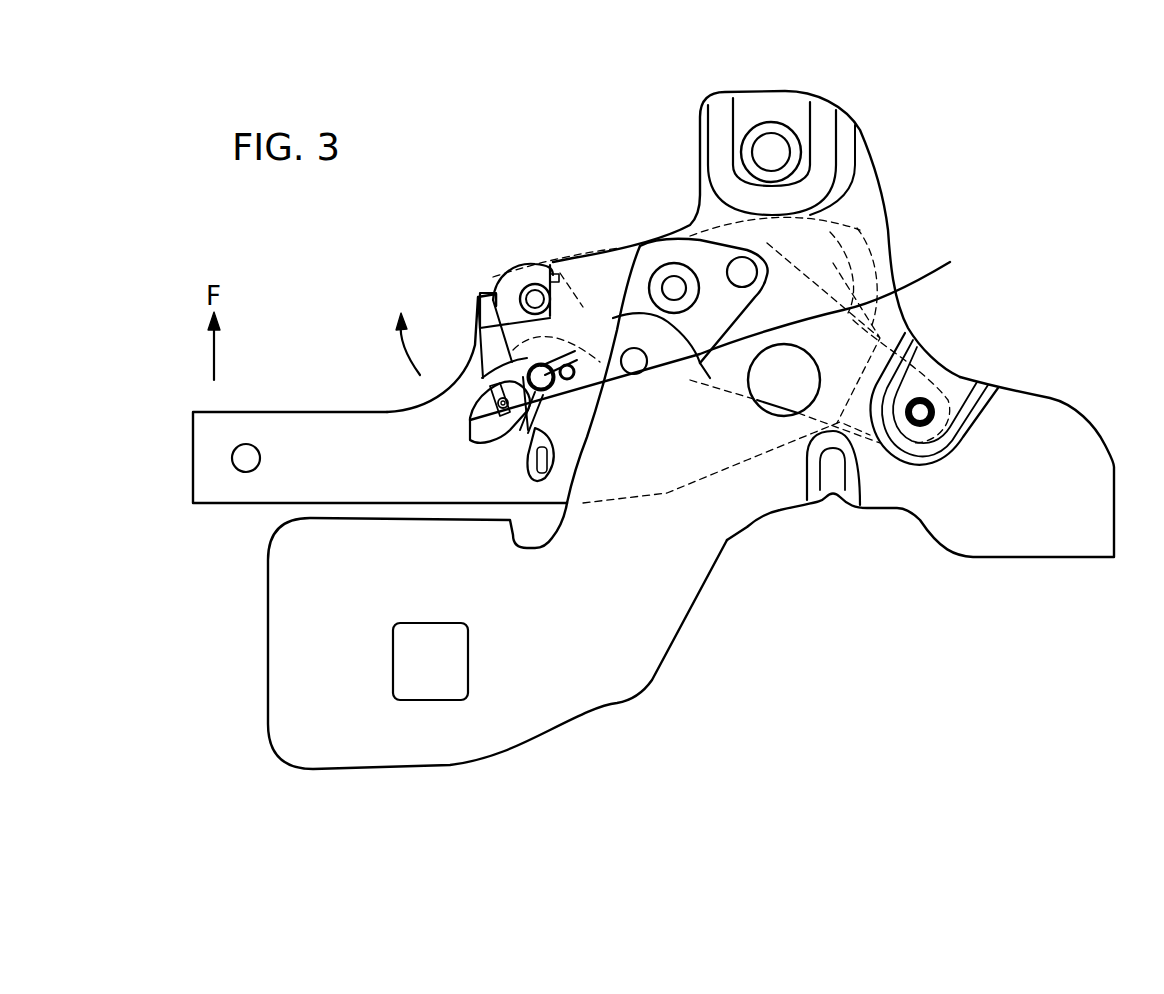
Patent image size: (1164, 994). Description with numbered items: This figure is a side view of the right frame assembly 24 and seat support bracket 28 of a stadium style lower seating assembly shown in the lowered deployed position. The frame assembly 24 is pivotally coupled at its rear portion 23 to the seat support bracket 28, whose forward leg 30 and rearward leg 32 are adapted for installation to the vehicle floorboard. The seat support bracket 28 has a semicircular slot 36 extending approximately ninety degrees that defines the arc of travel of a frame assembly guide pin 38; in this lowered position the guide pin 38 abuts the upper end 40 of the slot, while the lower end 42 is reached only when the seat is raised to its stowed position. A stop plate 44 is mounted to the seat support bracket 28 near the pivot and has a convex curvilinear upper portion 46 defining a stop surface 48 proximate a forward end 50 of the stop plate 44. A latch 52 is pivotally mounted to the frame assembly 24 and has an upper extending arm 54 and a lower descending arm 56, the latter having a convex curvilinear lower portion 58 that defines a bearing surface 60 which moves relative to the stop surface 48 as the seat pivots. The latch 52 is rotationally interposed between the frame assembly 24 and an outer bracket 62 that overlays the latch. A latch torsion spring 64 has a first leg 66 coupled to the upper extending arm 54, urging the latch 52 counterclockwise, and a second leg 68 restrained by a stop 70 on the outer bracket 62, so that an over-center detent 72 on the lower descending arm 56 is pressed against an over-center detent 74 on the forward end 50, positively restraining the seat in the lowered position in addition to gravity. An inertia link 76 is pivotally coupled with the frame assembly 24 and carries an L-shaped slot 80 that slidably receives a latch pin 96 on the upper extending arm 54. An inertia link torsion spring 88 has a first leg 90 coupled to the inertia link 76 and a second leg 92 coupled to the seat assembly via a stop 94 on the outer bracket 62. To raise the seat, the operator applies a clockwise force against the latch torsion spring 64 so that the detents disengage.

The rear portion 23 is at (640, 493).
The frame assembly 24 is at (310, 447).
The seat support bracket 28 is at (510, 724).
The forward leg 30 is at (363, 757).
The rearward leg 32 is at (1023, 543).
The semicircular slot 36 is at (730, 331).
The frame assembly guide pin 38 is at (755, 263).
The upper end 40 is at (767, 277).
The lower end 42 is at (710, 362).
The stop plate 44 is at (873, 357).
The convex curvilinear upper portion 46 is at (618, 262).
The stop surface 48 is at (658, 250).
The forward end 50 is at (607, 280).
The latch 52 is at (483, 318).
The upper extending arm 54 is at (520, 453).
The lower descending arm 56 is at (587, 363).
The convex curvilinear lower portion 58 is at (697, 367).
The bearing surface 60 is at (715, 365).
The outer bracket 62 is at (720, 252).
The latch torsion spring 64 is at (495, 290).
The first leg 66 is at (482, 311).
The second leg 68 is at (526, 282).
The stop 70 is at (541, 262).
The over-center detent 72 is at (613, 333).
The over-center detent 74 is at (612, 297).
The inertia link 76 is at (467, 420).
The L-shaped slot 80 is at (467, 432).
The inertia link torsion spring 88 is at (633, 480).
The first leg 90 is at (527, 427).
The second leg 92 is at (573, 362).
The stop 94 is at (573, 365).
The latch pin 96 is at (475, 445).